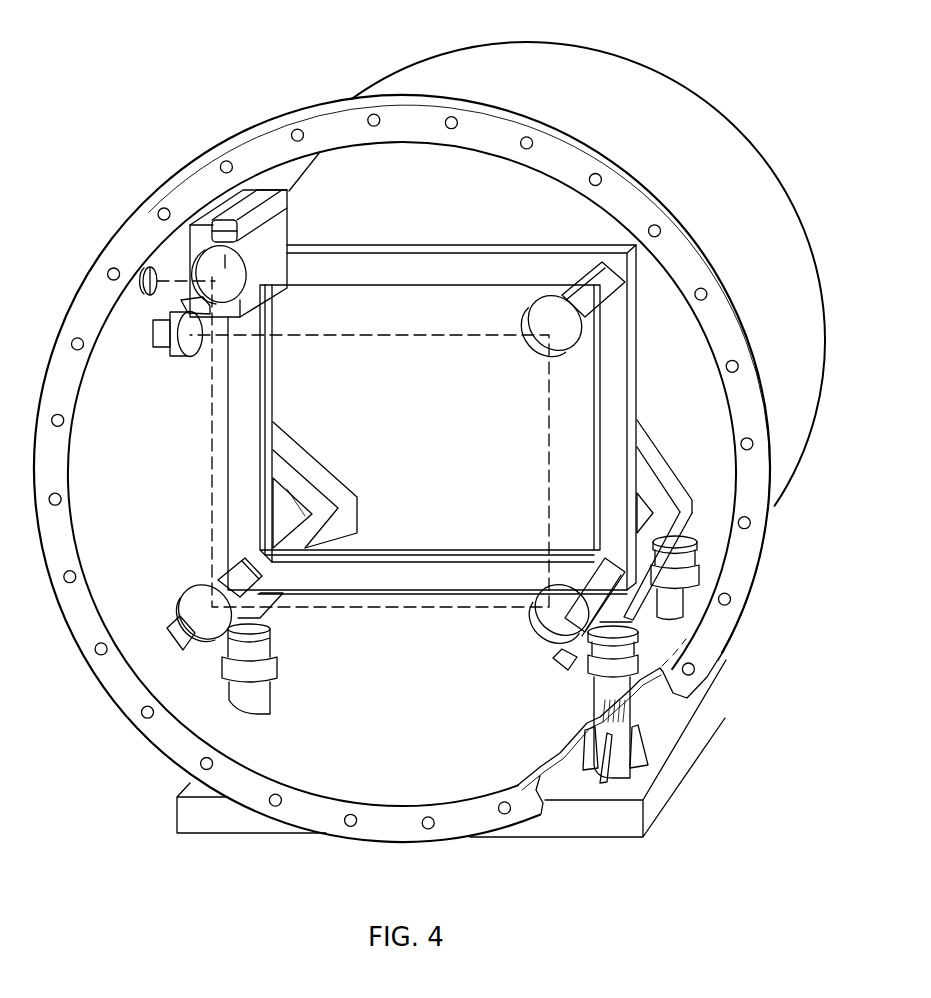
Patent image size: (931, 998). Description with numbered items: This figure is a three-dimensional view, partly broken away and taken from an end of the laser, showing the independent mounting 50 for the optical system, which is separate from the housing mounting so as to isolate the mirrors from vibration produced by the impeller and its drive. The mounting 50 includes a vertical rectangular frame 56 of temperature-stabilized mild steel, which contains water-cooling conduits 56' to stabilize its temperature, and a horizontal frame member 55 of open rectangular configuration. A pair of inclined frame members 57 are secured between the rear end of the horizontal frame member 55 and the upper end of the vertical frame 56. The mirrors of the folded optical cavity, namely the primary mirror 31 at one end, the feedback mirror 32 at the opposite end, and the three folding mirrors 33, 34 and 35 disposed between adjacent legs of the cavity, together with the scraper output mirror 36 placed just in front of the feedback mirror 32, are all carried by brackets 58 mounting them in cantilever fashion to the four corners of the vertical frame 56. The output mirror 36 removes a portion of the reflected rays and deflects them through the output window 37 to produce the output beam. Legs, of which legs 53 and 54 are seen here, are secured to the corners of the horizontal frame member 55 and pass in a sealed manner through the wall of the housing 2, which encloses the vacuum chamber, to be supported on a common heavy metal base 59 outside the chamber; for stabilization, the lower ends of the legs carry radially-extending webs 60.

The housing 2 is at (447, 55).
The primary mirror 31 is at (180, 350).
The feedback mirror 32 is at (286, 228).
The folding mirror 33 is at (553, 323).
The folding mirror 34 is at (545, 630).
The folding mirror 35 is at (185, 602).
The output mirror 36 is at (195, 270).
The output window 37 is at (140, 281).
The independent mounting 50 is at (224, 490).
The leg 53 is at (313, 597).
The leg 54 is at (657, 603).
The horizontal frame member 55 is at (690, 520).
The vertical rectangular frame 56 is at (462, 419).
The water-cooling conduits 56' is at (429, 423).
The inclined frame members 57 is at (663, 477).
The brackets 58 is at (277, 265).
The heavy metal base 59 is at (687, 747).
The radially-extending webs 60 is at (613, 775).